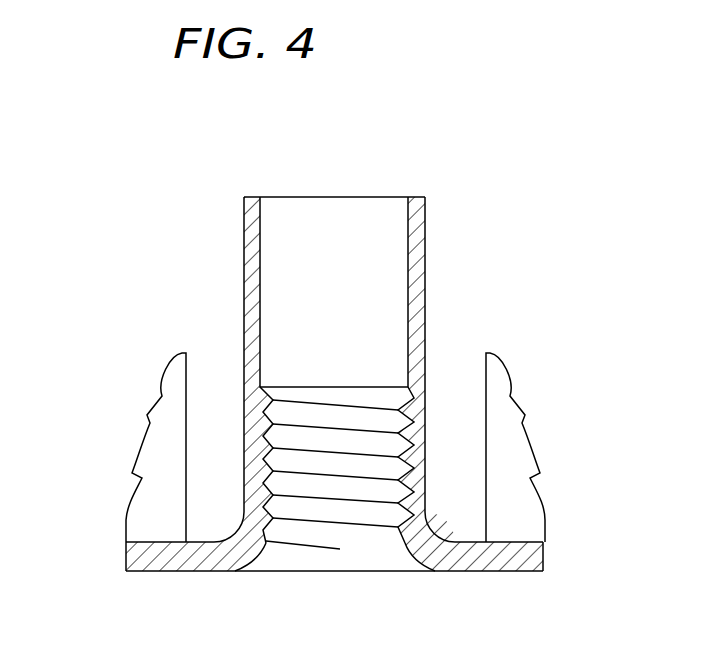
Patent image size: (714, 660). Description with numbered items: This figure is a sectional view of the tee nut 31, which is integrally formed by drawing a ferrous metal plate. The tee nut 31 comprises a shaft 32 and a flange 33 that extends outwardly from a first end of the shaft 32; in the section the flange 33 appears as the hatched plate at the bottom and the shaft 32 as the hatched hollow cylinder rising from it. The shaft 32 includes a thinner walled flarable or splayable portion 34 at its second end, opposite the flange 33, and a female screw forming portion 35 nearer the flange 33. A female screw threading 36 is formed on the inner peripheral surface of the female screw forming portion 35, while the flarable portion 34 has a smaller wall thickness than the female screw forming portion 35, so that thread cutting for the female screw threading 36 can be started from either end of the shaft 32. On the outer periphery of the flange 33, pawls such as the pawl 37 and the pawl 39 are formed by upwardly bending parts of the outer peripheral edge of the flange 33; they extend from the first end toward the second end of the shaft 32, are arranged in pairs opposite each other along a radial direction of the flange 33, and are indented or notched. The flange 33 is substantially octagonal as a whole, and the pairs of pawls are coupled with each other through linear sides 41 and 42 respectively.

The tee nut 31 is at (186, 177).
The shaft 32 is at (430, 219).
The flange 33 is at (457, 568).
The flarable portion 34 is at (255, 223).
The female screw forming portion 35 is at (248, 428).
The female screw threading 36 is at (324, 515).
The pawl 37 is at (162, 418).
The pawl 39 is at (510, 412).
The linear side 41 is at (126, 544).
The linear side 42 is at (543, 549).